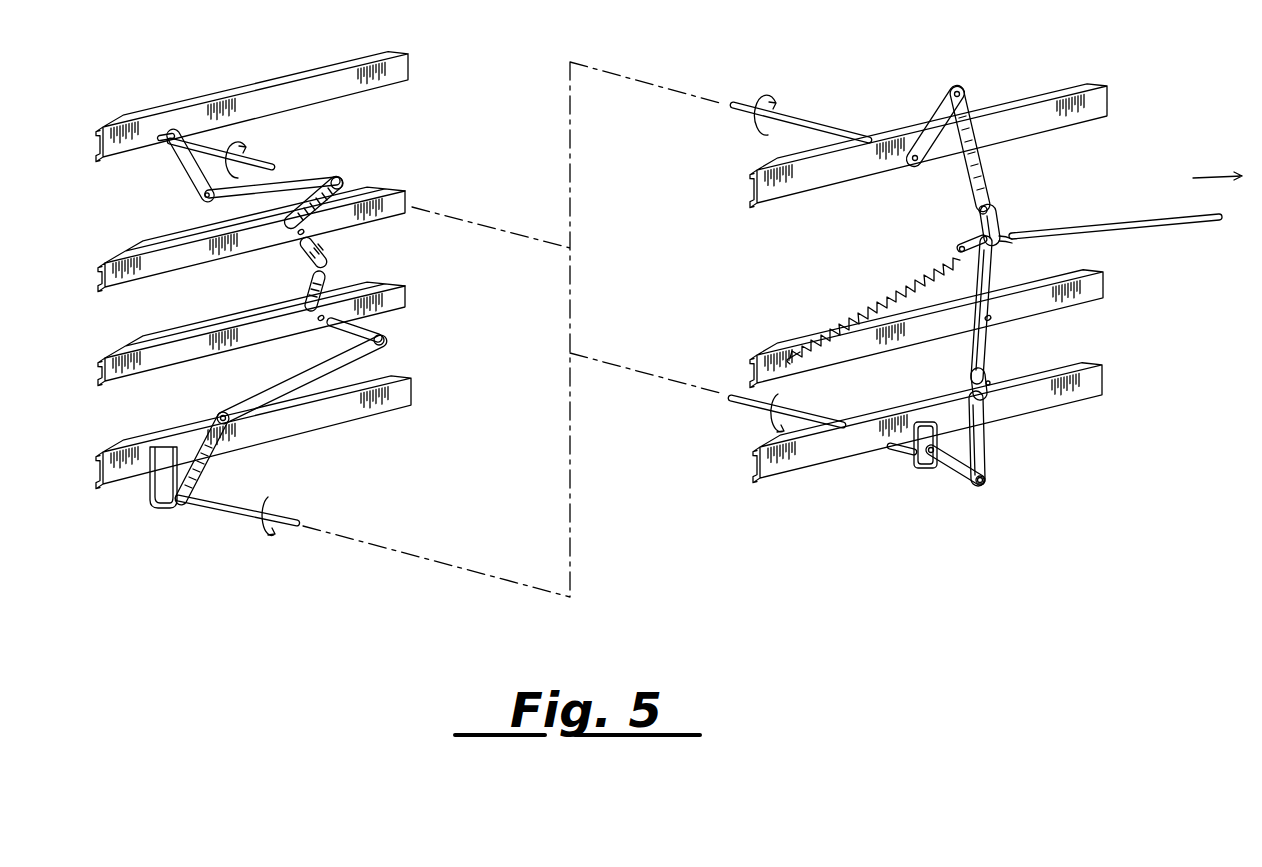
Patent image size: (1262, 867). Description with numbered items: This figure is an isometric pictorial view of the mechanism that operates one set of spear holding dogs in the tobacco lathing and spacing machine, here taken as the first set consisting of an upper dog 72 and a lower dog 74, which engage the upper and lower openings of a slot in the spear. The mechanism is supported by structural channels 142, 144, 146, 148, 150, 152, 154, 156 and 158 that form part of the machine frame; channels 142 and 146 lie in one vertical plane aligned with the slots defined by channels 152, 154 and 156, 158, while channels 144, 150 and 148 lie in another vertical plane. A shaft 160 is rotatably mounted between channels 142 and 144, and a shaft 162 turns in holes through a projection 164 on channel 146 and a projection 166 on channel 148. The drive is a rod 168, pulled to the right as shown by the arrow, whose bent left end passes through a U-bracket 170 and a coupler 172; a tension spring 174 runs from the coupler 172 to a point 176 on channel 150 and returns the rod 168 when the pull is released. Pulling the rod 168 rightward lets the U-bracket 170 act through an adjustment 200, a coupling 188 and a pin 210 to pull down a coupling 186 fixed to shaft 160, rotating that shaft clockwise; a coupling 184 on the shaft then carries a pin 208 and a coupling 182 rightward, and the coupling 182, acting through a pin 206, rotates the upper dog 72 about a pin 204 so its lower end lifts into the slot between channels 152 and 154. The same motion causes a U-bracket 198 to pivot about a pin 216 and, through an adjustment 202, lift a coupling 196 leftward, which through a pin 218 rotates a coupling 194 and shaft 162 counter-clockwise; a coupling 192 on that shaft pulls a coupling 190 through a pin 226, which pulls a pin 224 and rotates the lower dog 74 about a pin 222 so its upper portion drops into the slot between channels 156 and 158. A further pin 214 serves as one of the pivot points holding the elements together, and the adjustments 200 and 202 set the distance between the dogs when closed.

The upper dog 72 is at (350, 170).
The lower dog 74 is at (386, 332).
The channel 142 is at (314, 62).
The channel 144 is at (1060, 88).
The channel 146 is at (338, 425).
The channel 148 is at (1085, 396).
The channel 150 is at (1088, 301).
The channel 152 is at (225, 245).
The channel 154 is at (104, 266).
The channel 156 is at (225, 339).
The channel 158 is at (104, 360).
The shaft 160 is at (262, 152).
The shaft 162 is at (233, 509).
The projection 164 is at (160, 504).
The projection 166 is at (930, 469).
The rod 168 is at (1170, 219).
The U-bracket 170 is at (1002, 221).
The coupler 172 is at (959, 241).
The tension spring 174 is at (905, 286).
The point 176 is at (786, 351).
The coupling 182 is at (237, 200).
The coupling 184 is at (177, 166).
The coupling 186 is at (935, 110).
The coupling 188 is at (982, 167).
The coupling 190 is at (306, 373).
The coupling 192 is at (209, 481).
The coupling 194 is at (951, 468).
The coupling 196 is at (986, 456).
The U-bracket 198 is at (968, 383).
The adjustment 200 is at (976, 211).
The adjustment 202 is at (984, 401).
The pin 204 is at (308, 233).
The pin 206 is at (334, 176).
The pin 208 is at (201, 193).
The pin 210 is at (957, 88).
The pin 214 is at (994, 322).
The pin 216 is at (992, 386).
The pin 218 is at (983, 485).
The pin 222 is at (322, 316).
The pin 224 is at (385, 343).
The pin 226 is at (218, 417).